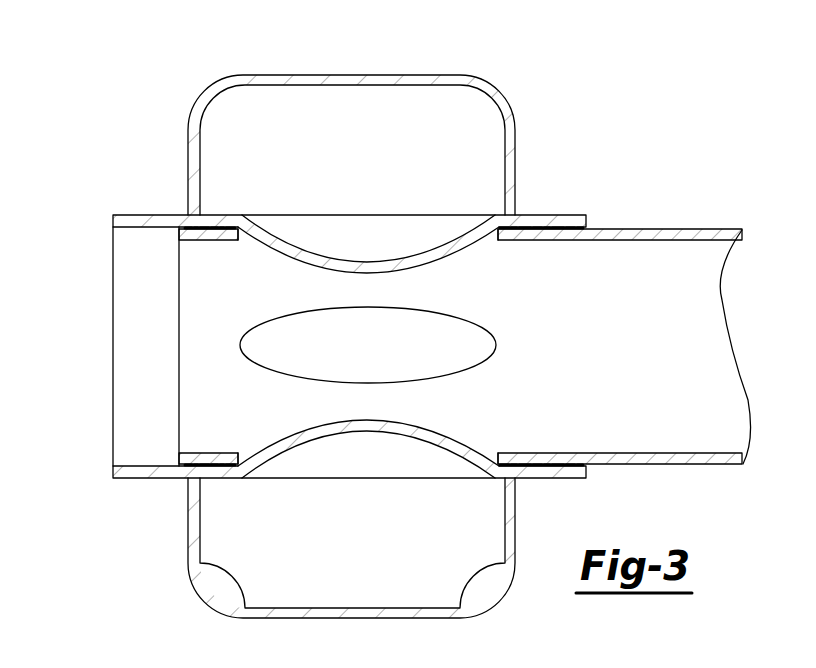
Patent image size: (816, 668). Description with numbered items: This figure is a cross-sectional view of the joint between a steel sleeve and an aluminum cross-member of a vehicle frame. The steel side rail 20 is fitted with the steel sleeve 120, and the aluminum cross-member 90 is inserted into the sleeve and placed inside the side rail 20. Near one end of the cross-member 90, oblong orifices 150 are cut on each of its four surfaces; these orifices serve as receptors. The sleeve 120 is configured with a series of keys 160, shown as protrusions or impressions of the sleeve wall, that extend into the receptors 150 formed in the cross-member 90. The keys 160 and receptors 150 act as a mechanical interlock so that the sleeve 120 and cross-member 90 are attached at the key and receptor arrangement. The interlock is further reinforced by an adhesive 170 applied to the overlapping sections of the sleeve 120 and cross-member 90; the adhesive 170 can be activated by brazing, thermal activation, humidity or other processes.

The side rail 20 is at (288, 75).
The cross-member 90 is at (684, 354).
The sleeve 120 is at (540, 215).
The oblong orifices 150 is at (245, 244).
The keys 160 is at (365, 262).
The adhesive 170 is at (181, 228).